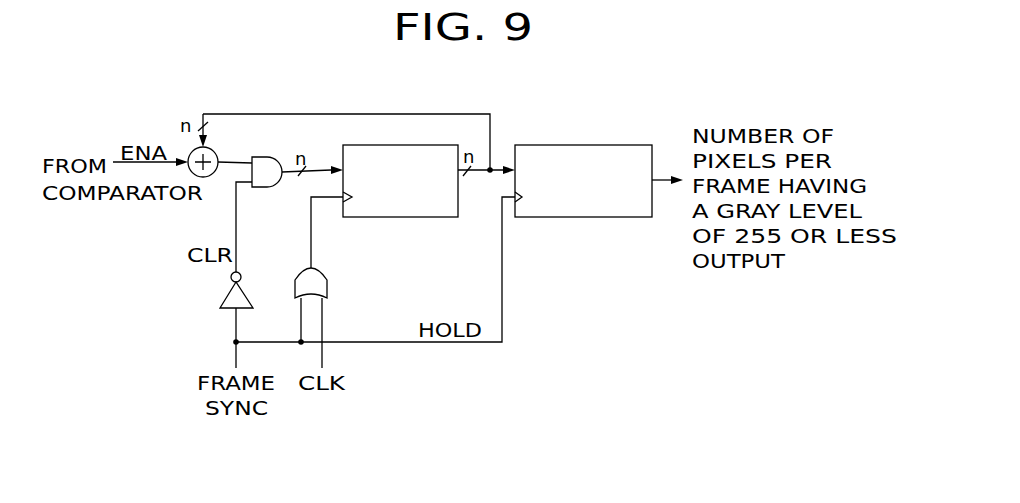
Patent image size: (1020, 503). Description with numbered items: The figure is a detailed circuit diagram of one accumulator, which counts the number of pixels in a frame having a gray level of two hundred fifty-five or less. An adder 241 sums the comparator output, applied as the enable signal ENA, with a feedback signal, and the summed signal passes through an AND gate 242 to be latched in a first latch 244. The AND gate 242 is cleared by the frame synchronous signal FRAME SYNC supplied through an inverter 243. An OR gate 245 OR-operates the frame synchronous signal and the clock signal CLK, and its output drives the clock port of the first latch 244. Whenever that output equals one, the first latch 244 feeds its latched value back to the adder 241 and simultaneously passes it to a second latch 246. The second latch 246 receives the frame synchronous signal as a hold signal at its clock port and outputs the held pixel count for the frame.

The adder 241 is at (217, 151).
The AND gate 242 is at (268, 187).
The inverter 243 is at (226, 295).
The first latch 244 is at (428, 218).
The OR gate 245 is at (327, 294).
The second latch 246 is at (600, 218).